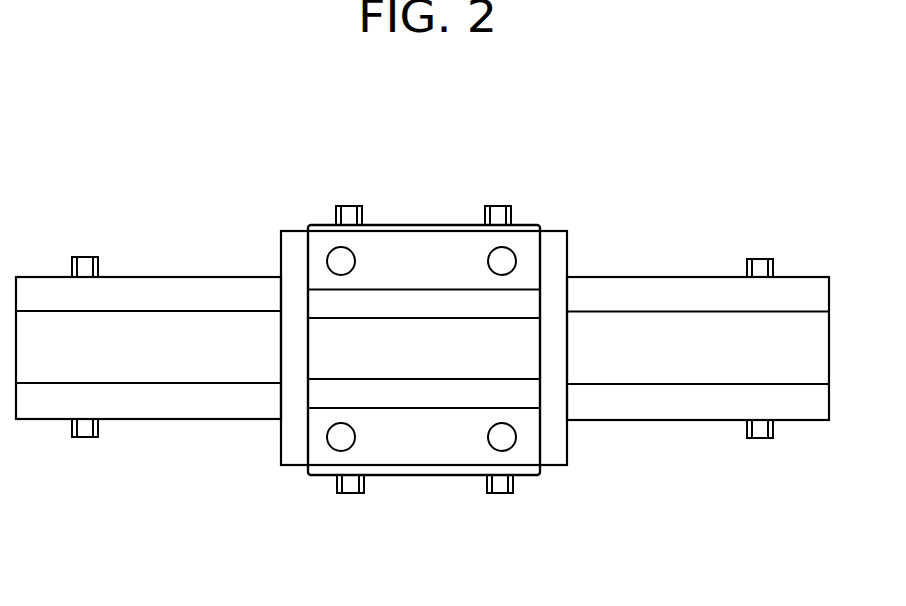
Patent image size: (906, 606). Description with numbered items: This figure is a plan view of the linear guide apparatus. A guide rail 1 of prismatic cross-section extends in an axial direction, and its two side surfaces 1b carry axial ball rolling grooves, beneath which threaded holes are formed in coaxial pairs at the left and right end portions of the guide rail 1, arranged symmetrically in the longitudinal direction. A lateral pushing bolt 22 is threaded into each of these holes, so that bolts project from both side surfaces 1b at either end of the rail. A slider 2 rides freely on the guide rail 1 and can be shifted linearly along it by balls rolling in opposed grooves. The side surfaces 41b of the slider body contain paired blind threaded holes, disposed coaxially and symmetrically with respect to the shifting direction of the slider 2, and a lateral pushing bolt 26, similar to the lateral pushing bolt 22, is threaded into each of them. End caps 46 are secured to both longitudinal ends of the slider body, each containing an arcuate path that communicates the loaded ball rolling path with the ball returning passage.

The guide rail 1 is at (181, 447).
The side surfaces of the guide rail 1b is at (660, 277).
The slider 2 is at (448, 347).
The lateral pushing bolt 22 is at (98, 257).
The lateral pushing bolt 26 is at (340, 206).
The side surfaces of the slider body 41b is at (448, 225).
The end cap 46 is at (293, 457).